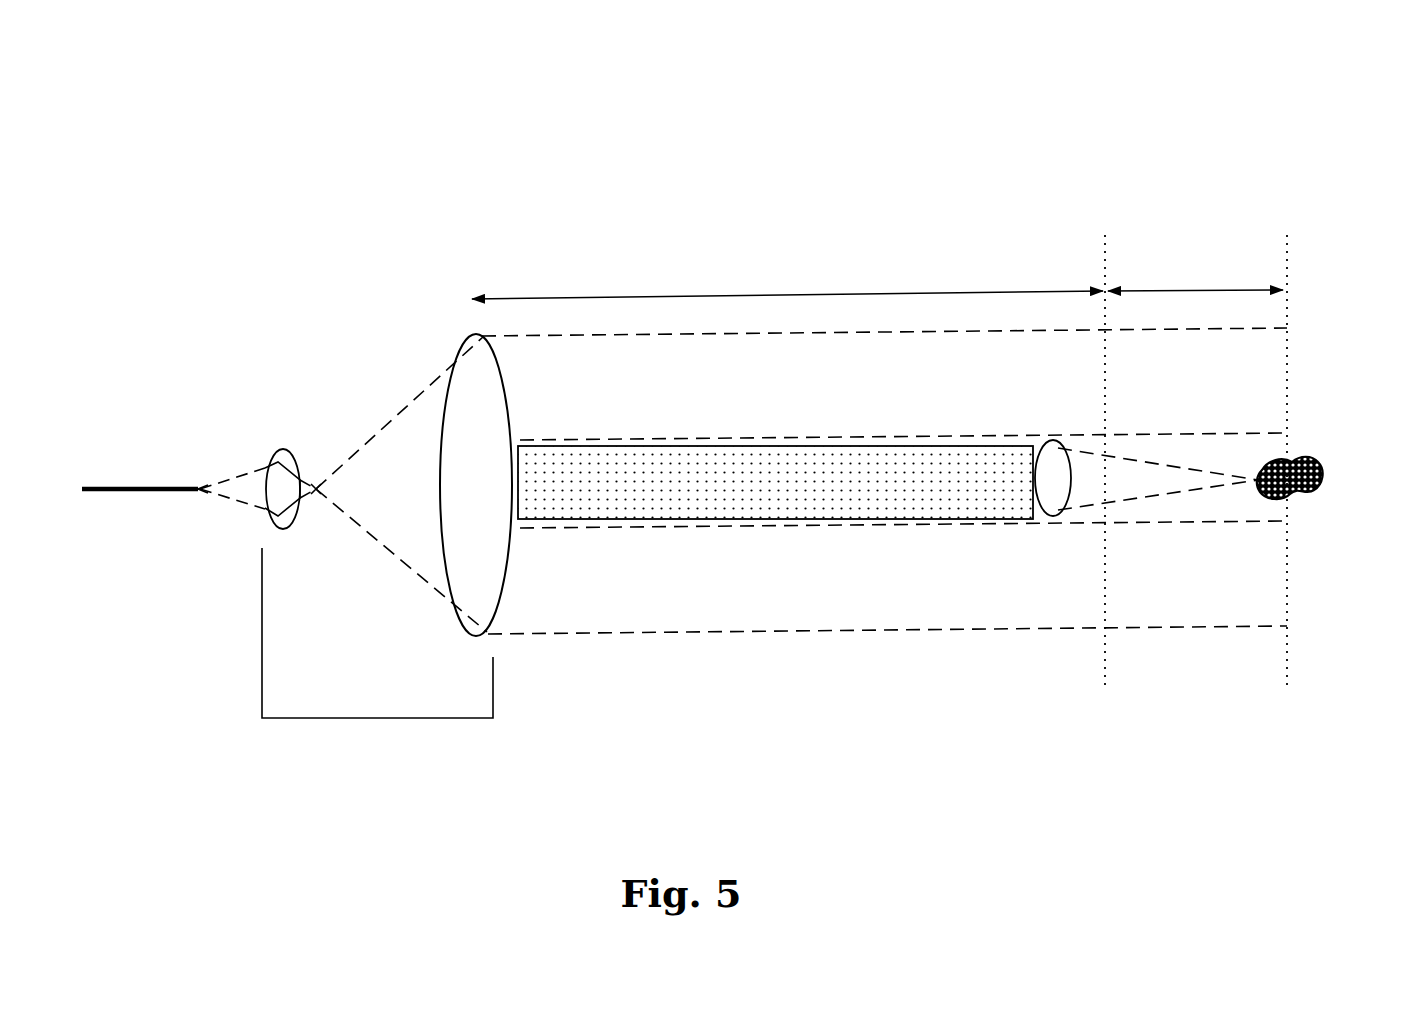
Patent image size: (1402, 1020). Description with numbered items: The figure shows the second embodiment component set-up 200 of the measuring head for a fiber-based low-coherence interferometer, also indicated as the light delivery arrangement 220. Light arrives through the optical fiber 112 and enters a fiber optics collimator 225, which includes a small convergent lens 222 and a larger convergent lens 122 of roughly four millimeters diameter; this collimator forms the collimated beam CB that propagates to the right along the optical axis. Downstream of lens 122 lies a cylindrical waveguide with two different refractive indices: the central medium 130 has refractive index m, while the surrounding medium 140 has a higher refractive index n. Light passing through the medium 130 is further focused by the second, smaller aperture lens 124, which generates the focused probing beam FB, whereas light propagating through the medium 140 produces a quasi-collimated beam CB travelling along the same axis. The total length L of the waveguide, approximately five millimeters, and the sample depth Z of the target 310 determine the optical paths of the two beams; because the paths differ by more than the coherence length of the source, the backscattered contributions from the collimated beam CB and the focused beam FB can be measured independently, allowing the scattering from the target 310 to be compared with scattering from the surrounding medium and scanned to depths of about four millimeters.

The second embodiment component set-up 200 is at (357, 270).
The light delivery device 220 is at (792, 205).
The optical fiber 112 is at (142, 518).
The convergent lens 222 is at (255, 460).
The fiber optics collimator 225 is at (377, 664).
The convergent lens 122 is at (414, 492).
The medium with refractive index m 130 is at (775, 593).
The medium with refractive index n 140 is at (773, 677).
The second smaller aperture lens 124 is at (1098, 605).
The target 310 is at (1322, 453).
The collimated beam CB is at (929, 483).
The focused beam FB is at (1158, 584).
The total length L is at (879, 461).
The depth Z is at (1195, 274).